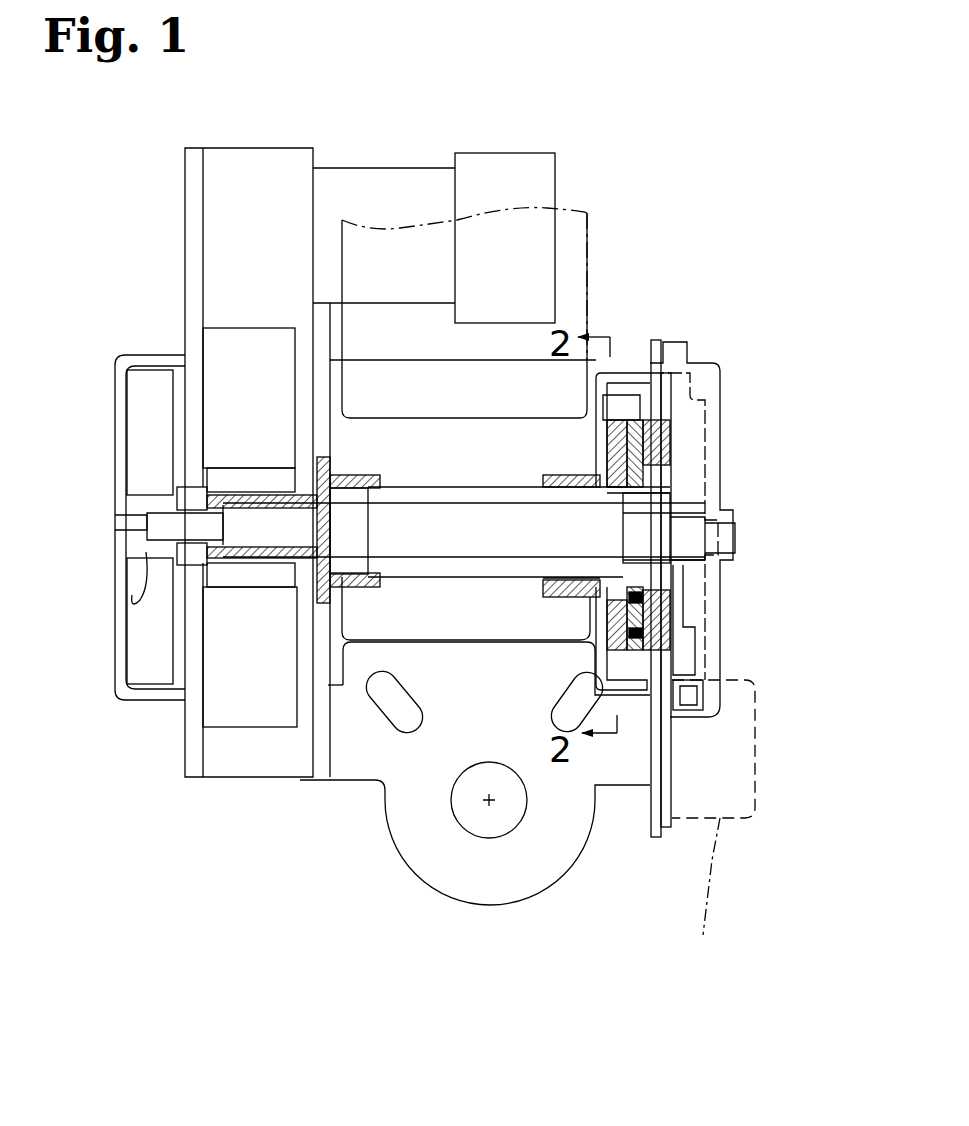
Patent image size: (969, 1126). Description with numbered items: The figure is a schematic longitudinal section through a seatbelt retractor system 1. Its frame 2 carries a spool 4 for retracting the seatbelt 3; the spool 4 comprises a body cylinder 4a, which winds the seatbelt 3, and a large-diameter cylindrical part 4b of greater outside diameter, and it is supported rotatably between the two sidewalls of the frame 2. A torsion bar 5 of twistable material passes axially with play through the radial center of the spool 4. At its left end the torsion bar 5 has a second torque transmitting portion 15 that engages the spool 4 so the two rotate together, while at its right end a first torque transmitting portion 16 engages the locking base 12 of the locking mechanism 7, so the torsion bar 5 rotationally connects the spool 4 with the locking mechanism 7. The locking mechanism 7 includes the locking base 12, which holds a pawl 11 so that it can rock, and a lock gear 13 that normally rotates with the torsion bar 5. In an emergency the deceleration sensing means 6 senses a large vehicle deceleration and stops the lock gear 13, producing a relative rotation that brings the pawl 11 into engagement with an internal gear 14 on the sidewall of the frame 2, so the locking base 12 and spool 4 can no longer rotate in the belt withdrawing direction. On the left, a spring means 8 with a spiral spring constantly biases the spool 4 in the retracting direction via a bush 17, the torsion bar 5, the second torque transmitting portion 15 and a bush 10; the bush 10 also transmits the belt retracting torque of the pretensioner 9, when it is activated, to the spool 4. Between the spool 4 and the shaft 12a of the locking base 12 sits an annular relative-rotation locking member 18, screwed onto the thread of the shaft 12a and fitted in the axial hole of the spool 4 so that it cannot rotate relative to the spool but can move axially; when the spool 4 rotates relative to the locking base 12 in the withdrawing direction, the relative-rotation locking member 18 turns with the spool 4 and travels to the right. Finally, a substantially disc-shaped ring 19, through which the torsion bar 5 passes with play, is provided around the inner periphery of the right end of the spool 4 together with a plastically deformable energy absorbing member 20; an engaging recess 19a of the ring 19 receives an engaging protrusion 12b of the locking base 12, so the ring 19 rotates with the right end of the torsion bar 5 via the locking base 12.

The retractor system 1 is at (95, 228).
The frame 2 is at (407, 817).
The seatbelt 3 is at (597, 227).
The spool 4 is at (363, 407).
The body cylinder 4a is at (410, 440).
The large-diameter cylindrical part 4b is at (637, 368).
The torsion bar 5 is at (410, 527).
The deceleration sensing means 6 is at (704, 891).
The locking mechanism 7 is at (703, 352).
The spring means 8 is at (118, 708).
The pretensioner 9 is at (483, 175).
The bush 10 is at (313, 460).
The pawl 11 is at (640, 660).
The locking base 12 is at (647, 458).
The shaft of the locking base 12a is at (543, 587).
The engaging protrusion 12b is at (600, 445).
The lock gear 13 is at (693, 723).
The internal gear 14 is at (660, 697).
The second torque transmitting portion 15 is at (298, 643).
The first torque transmitting portion 16 is at (647, 505).
The bush 17 is at (123, 590).
The relative-rotation locking member 18 is at (543, 471).
The ring 19 is at (610, 627).
The engaging recess 19a is at (663, 417).
The energy absorbing member 20 is at (605, 420).